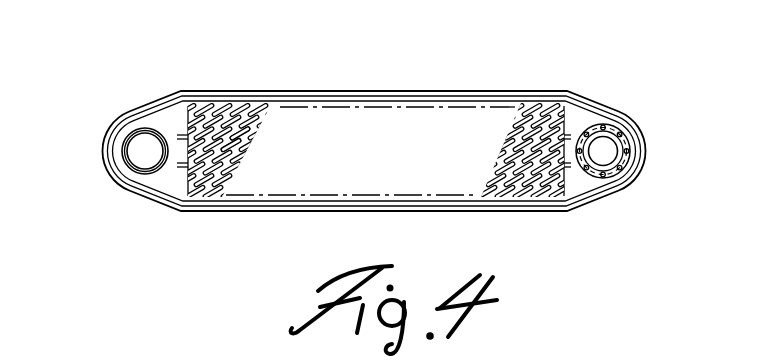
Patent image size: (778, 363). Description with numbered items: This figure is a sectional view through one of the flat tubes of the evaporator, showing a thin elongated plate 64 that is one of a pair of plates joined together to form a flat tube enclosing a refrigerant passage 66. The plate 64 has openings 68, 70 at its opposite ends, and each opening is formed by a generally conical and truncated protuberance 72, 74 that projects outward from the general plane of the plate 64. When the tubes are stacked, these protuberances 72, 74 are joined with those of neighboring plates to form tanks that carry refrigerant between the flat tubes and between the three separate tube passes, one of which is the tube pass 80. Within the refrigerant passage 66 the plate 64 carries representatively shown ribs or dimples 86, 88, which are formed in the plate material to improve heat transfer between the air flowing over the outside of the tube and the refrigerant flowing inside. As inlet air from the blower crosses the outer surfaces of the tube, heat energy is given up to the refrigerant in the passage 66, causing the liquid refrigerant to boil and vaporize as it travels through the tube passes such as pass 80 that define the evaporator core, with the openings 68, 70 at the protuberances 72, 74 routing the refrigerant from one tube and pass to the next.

The plate 64 is at (392, 92).
The refrigerant passage 66 is at (400, 162).
The opening 68 is at (138, 156).
The opening 70 is at (606, 156).
The protuberance 72 is at (141, 118).
The protuberance 74 is at (623, 116).
The tube pass 80 is at (558, 110).
The ribs or dimples 86 is at (256, 110).
The ribs or dimples 88 is at (222, 150).